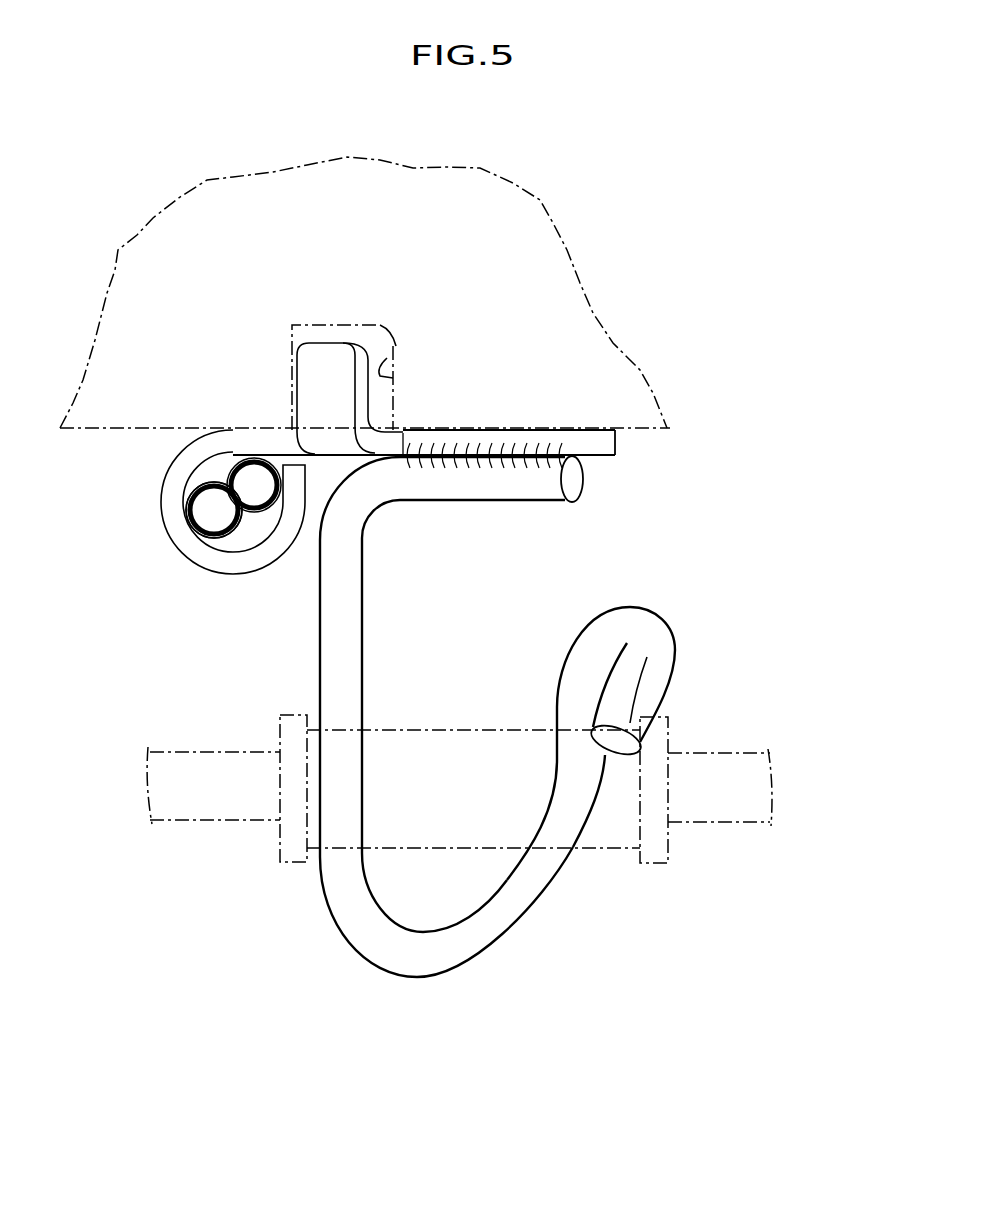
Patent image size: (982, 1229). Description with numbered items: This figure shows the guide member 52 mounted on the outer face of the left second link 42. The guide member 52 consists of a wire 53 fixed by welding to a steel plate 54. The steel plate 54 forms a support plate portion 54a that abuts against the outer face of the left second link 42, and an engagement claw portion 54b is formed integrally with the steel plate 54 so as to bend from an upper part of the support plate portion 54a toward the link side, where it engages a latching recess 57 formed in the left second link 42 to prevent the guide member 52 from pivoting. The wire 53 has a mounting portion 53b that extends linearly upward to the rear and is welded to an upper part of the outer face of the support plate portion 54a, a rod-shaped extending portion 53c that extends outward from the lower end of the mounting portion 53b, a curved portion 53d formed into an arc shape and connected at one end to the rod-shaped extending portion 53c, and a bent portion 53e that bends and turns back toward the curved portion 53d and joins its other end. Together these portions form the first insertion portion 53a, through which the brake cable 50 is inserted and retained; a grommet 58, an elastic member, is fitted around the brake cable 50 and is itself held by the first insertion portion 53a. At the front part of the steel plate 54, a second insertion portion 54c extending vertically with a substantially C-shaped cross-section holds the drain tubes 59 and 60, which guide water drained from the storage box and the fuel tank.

The left second link 42 is at (577, 300).
The brake cable 50 is at (230, 822).
The guide member 52 is at (681, 514).
The wire 53 is at (493, 723).
The first insertion portion 53a is at (378, 970).
The mounting portion 53b is at (462, 488).
The rod-shaped extending portion 53c is at (333, 607).
The curved portion 53d is at (512, 912).
The bent portion 53e is at (643, 660).
The steel plate 54 is at (439, 449).
The support plate portion 54a is at (583, 432).
The engagement claw portion 54b is at (339, 358).
The second insertion portion 54c is at (187, 547).
The latching recess 57 is at (396, 348).
The grommet 58 is at (425, 730).
The drain tube 59 is at (193, 491).
The drain tube 60 is at (249, 457).